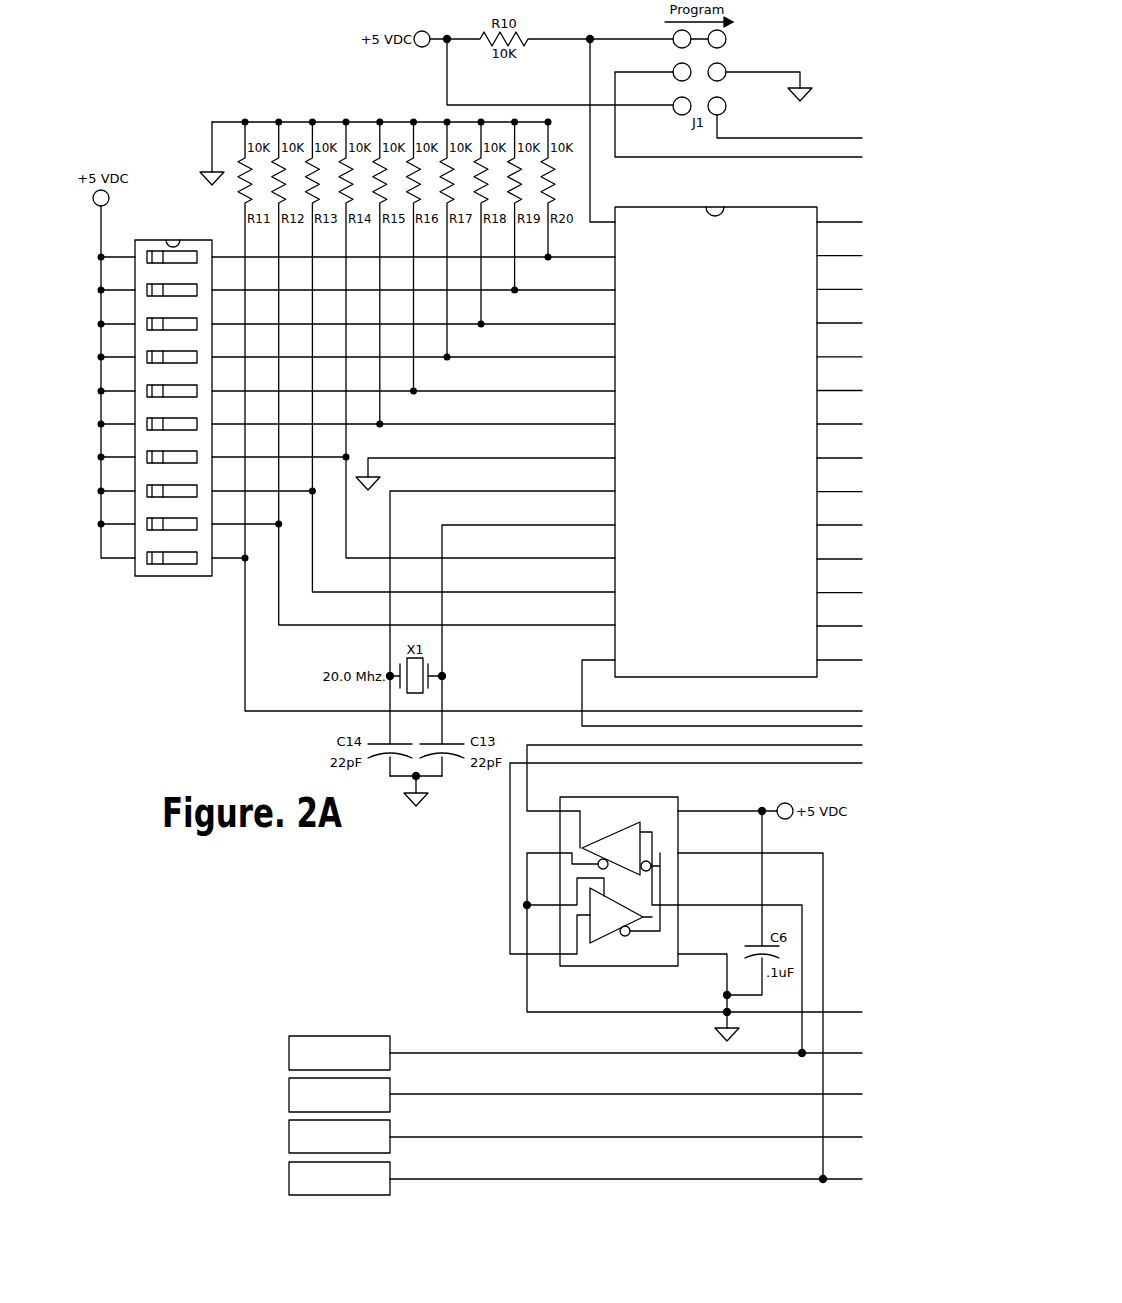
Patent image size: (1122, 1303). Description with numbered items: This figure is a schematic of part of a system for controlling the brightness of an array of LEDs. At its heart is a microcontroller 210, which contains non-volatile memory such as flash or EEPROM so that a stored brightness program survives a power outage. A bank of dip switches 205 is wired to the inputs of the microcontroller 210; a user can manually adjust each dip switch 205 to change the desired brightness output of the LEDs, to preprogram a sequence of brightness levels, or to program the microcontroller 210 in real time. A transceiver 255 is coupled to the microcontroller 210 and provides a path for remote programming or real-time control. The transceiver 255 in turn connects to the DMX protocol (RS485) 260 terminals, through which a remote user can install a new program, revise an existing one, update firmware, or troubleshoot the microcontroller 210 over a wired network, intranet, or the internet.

The dip switches 205 is at (180, 578).
The microcontroller 210 is at (768, 207).
The transceiver 255 is at (608, 966).
The DMX protocol (RS485) 260 is at (342, 1034).